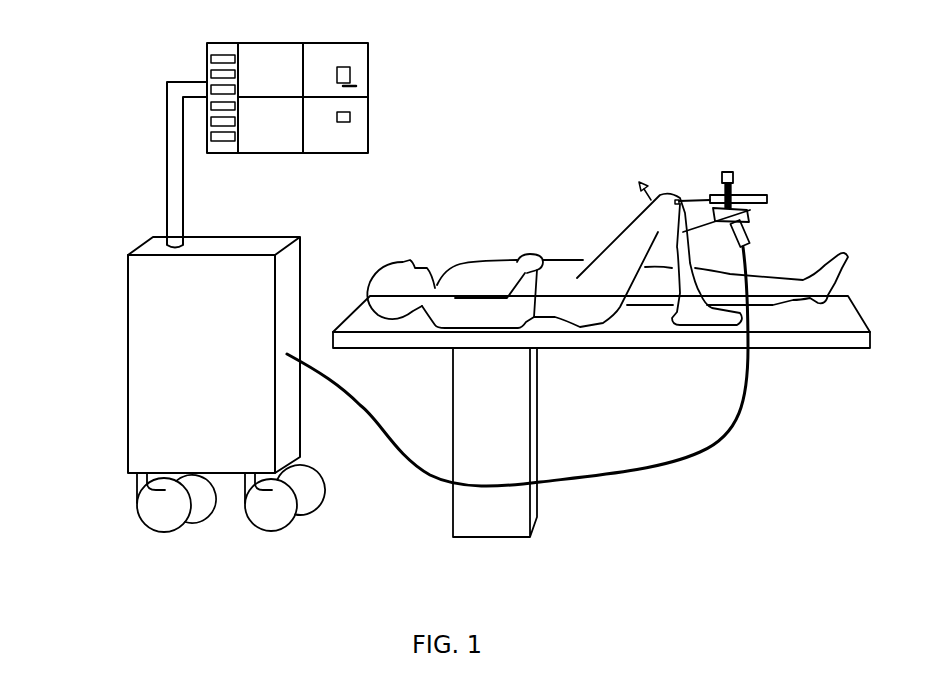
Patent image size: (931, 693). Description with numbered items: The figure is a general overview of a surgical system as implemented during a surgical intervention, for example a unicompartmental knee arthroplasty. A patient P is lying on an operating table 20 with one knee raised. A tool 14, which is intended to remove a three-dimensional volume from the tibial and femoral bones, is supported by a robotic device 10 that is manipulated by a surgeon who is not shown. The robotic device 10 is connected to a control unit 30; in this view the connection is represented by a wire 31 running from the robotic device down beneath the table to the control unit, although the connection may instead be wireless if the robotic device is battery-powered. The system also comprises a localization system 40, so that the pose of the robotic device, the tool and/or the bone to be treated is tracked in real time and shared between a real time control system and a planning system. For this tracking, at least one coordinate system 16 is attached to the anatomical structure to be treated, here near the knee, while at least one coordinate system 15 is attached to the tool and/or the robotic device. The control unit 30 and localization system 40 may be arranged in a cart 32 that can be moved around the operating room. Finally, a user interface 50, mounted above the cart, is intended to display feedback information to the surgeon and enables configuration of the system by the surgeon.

The robotic device 10 is at (764, 225).
The tool 14 is at (696, 196).
The coordinate system 15 is at (734, 177).
The coordinate system 16 is at (648, 192).
The operating table 20 is at (815, 348).
The control unit 30 is at (143, 352).
The wire 31 is at (685, 456).
The cart 32 is at (105, 508).
The localization system 40 is at (626, 176).
The user interface 50 is at (283, 60).
The patient P is at (467, 272).